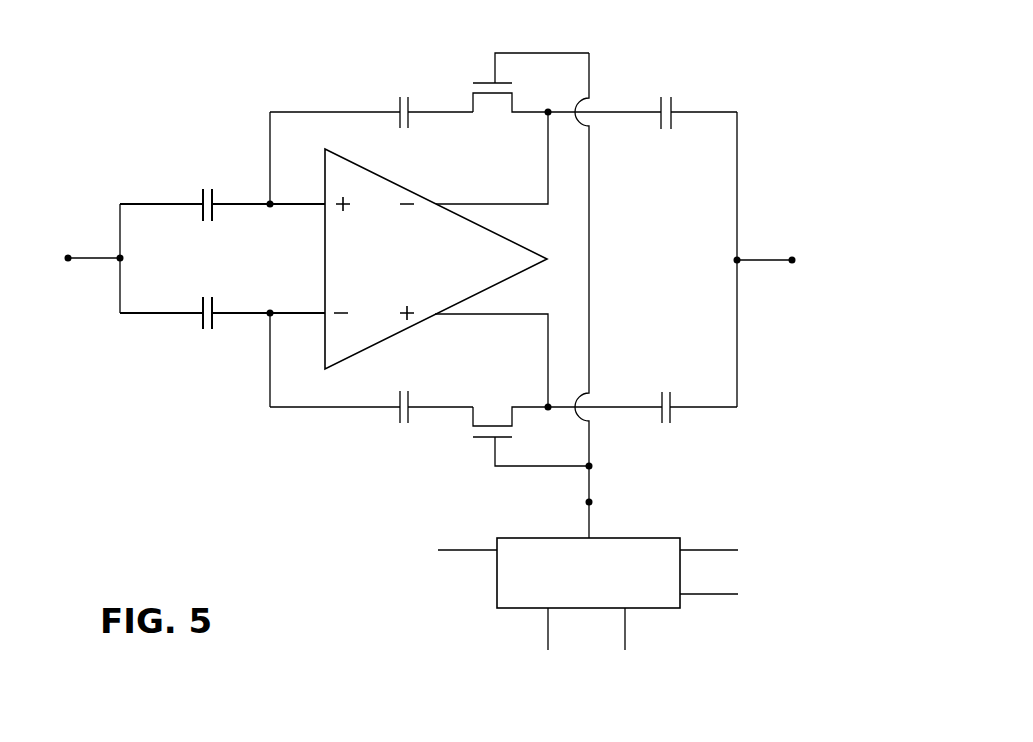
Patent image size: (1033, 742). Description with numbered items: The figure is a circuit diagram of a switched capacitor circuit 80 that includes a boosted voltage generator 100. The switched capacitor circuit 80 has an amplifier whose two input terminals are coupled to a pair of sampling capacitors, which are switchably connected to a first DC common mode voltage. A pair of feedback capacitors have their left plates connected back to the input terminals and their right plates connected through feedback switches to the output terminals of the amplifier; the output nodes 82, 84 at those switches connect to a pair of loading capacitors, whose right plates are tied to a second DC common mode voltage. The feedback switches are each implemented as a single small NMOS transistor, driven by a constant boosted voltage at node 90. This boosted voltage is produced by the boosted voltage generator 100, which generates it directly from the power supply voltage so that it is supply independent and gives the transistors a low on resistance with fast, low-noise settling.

The switched capacitor circuit 80 is at (731, 55).
The first output node (OUTP) 82 is at (549, 108).
The second output node (OUTN) 84 is at (549, 411).
The node 90 is at (592, 502).
The boosted voltage generator 100 is at (501, 609).